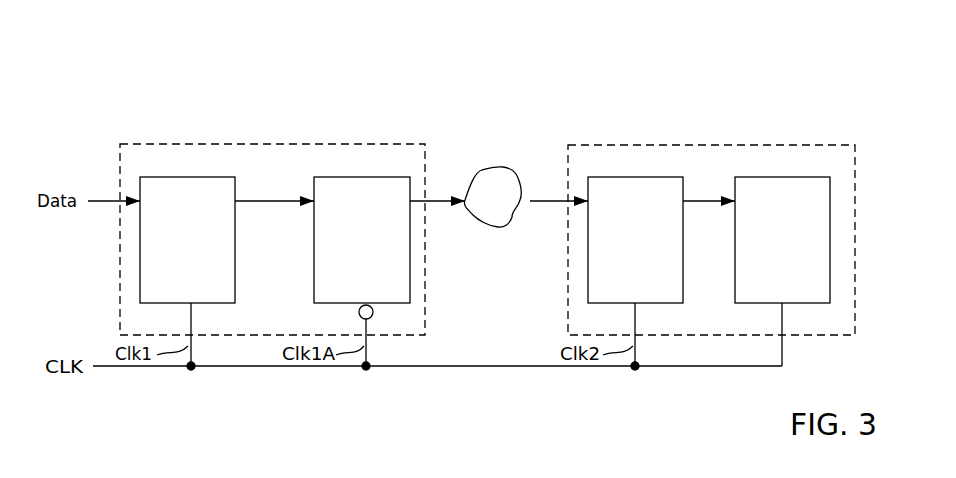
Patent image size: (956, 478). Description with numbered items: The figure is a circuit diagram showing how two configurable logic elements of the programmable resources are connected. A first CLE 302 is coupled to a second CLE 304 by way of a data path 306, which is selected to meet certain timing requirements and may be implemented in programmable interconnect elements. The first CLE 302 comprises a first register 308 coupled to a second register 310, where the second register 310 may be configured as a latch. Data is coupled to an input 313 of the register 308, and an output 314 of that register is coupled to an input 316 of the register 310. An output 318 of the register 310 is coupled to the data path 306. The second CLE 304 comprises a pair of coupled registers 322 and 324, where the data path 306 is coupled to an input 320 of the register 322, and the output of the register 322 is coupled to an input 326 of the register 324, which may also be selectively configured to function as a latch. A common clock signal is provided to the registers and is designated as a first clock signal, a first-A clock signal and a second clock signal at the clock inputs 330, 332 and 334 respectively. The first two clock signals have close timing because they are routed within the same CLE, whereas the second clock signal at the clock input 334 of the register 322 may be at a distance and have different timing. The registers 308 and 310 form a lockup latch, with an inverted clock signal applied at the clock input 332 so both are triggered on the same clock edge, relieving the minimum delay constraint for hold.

The first CLE 302 is at (370, 144).
The second CLE 304 is at (758, 145).
The data path 306 is at (505, 167).
The first register 308 is at (200, 177).
The second register 310 is at (385, 177).
The input 313 is at (139, 203).
The output 314 is at (238, 197).
The input 316 is at (311, 207).
The output 318 is at (415, 197).
The input 320 is at (587, 205).
The register 322 is at (683, 260).
The register 324 is at (683, 192).
The input 326 is at (735, 201).
The clock input 330 is at (191, 305).
The clock input 332 is at (360, 313).
The clock input 334 is at (633, 302).